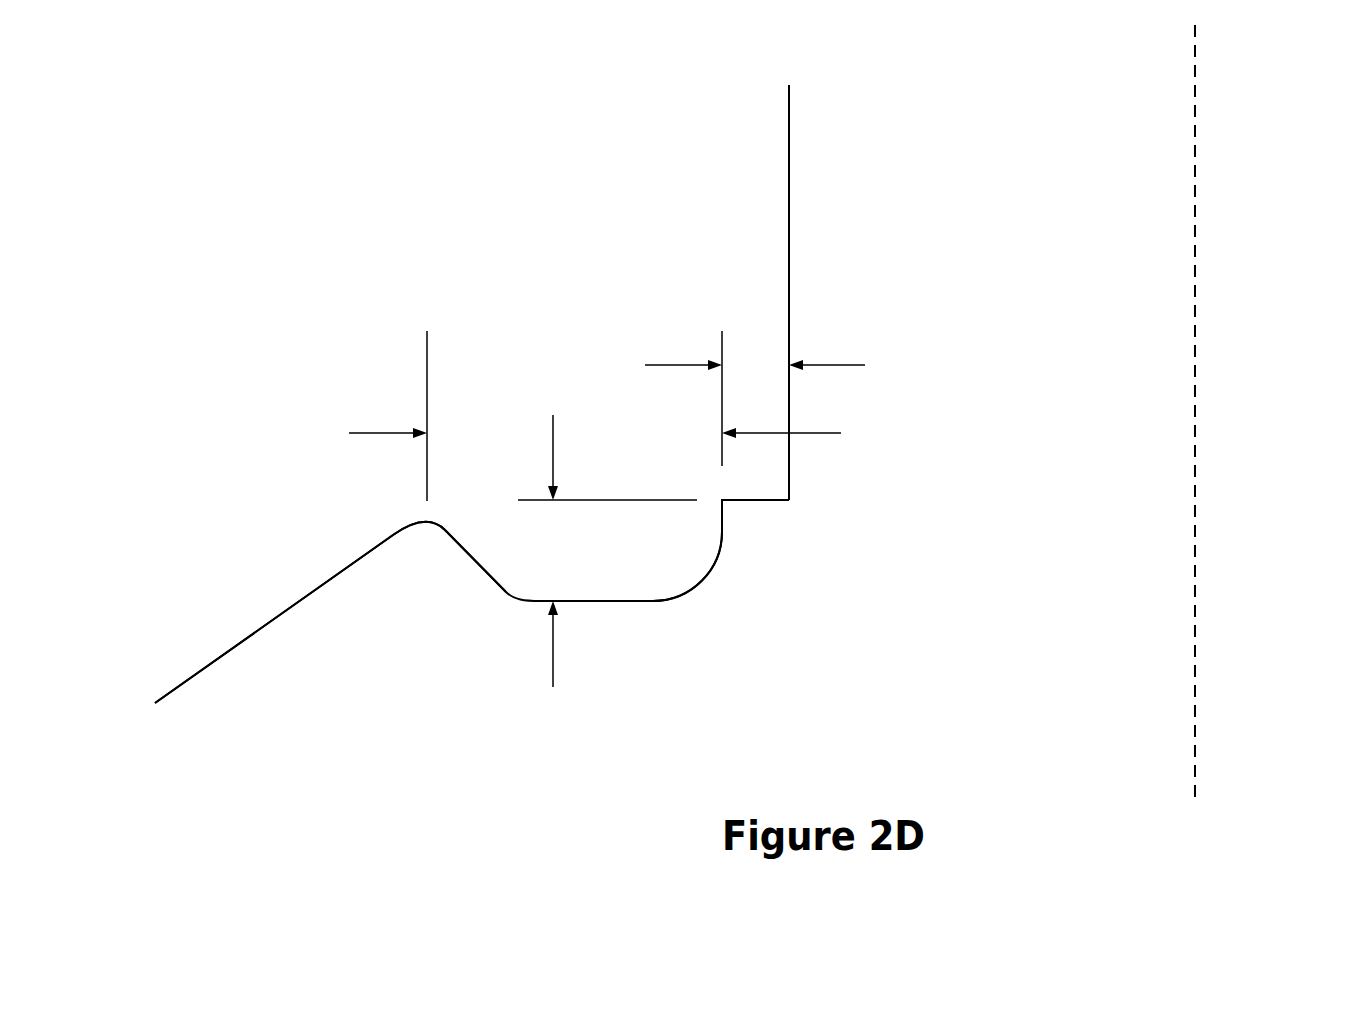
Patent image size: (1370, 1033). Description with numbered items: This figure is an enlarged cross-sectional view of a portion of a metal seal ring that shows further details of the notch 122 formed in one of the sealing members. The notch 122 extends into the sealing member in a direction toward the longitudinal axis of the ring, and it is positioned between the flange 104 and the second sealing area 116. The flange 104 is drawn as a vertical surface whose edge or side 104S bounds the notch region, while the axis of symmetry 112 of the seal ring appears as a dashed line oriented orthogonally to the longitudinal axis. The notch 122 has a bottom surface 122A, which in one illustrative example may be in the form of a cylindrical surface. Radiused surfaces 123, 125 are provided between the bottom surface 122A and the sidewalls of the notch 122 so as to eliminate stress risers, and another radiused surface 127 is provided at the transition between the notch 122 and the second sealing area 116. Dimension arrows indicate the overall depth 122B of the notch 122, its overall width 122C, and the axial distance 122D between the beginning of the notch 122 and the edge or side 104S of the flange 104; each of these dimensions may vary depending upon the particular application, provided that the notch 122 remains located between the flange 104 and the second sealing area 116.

The flange 104 is at (956, 170).
The edge or side of the flange 104S is at (789, 178).
The axis of symmetry 112 is at (1195, 365).
The second sealing area 116 is at (279, 549).
The notch 122 is at (479, 280).
The bottom surface 122A is at (593, 601).
The overall depth 122B is at (553, 663).
The overall width 122C is at (823, 433).
The axial distance 122D is at (841, 365).
The radiused surface 123 is at (722, 587).
The radiused surface 125 is at (500, 612).
The radiused surface 127 is at (418, 546).